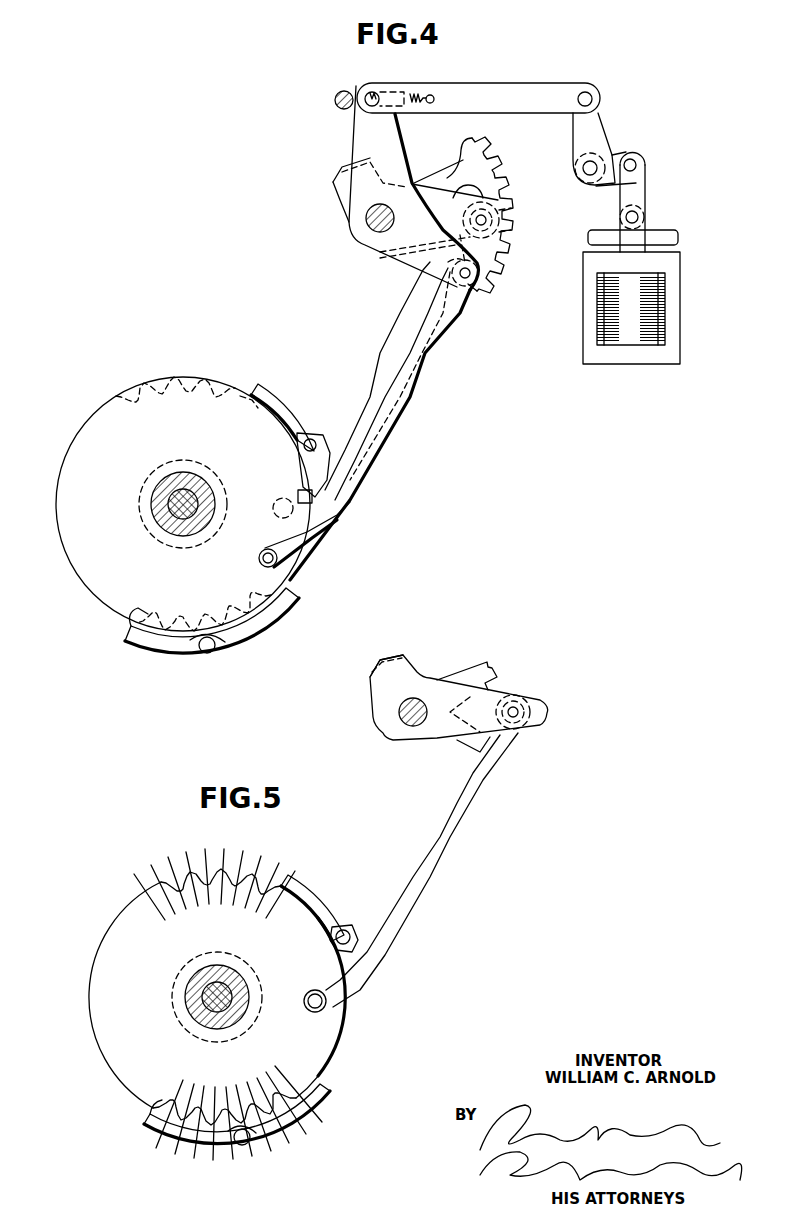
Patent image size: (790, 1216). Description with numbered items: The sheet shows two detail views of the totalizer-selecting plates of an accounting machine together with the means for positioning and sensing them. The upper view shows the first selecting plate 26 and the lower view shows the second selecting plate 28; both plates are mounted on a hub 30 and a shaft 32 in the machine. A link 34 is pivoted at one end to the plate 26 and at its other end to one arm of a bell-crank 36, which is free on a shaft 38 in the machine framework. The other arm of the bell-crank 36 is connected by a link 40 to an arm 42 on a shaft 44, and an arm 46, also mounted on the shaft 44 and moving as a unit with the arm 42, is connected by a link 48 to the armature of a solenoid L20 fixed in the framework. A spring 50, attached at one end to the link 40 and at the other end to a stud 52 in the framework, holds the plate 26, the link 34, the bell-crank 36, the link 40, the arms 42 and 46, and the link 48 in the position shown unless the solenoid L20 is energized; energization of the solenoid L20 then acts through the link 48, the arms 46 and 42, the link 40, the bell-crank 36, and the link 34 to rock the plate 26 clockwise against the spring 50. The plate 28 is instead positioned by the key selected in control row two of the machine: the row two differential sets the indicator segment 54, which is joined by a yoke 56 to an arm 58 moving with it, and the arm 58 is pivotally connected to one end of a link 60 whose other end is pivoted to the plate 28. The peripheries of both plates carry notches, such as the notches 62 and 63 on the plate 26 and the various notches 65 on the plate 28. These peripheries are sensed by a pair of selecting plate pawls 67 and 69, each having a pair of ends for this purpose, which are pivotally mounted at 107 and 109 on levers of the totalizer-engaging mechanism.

In FIG. 4, the link 40 is at (530, 102).
In FIG. 4, the spring 50 is at (388, 90).
In FIG. 4, the stud 52 is at (340, 90).
In FIG. 4, the arm 42 is at (572, 134).
In FIG. 4, the shaft 44 is at (582, 175).
In FIG. 4, the arm 46 is at (632, 158).
In FIG. 4, the link 48 is at (640, 188).
In FIG. 4, the solenoid L20 is at (680, 286).
In FIG. 4, the row 2 indicator segment 54 is at (447, 176).
In FIG. 5, the row 2 indicator segment 54 is at (478, 672).
In FIG. 4, the yoke 56 is at (340, 176).
In FIG. 5, the yoke 56 is at (386, 662).
In FIG. 4, the arm 58 is at (343, 200).
In FIG. 5, the arm 58 is at (428, 742).
In FIG. 4, the shaft 38 is at (366, 226).
In FIG. 5, the shaft 38 is at (400, 706).
In FIG. 4, the bell-crank 36 is at (395, 258).
In FIG. 4, the link 60 is at (420, 313).
In FIG. 5, the link 60 is at (468, 800).
In FIG. 4, the link 34 is at (405, 393).
In FIG. 4, the selecting plate 28 is at (306, 500).
In FIG. 5, the selecting plate 28 is at (86, 984).
In FIG. 4, the notch 62 is at (303, 490).
In FIG. 4, the selecting plate pawl 67 is at (258, 392).
In FIG. 5, the selecting plate pawl 67 is at (322, 906).
In FIG. 4, the pivot 107 is at (312, 436).
In FIG. 5, the pivot 107 is at (342, 930).
In FIG. 4, the selecting plate 26 is at (78, 443).
In FIG. 4, the hub 30 is at (188, 528).
In FIG. 5, the hub 30 is at (196, 995).
In FIG. 4, the shaft 32 is at (172, 502).
In FIG. 5, the shaft 32 is at (238, 985).
In FIG. 4, the selecting plate pawl 69 is at (285, 625).
In FIG. 5, the selecting plate pawl 69 is at (300, 1138).
In FIG. 4, the notch 63 is at (140, 616).
In FIG. 4, the pivot 109 is at (200, 650).
In FIG. 5, the pivot 109 is at (243, 1146).
In FIG. 5, the notches 65 is at (227, 1004).